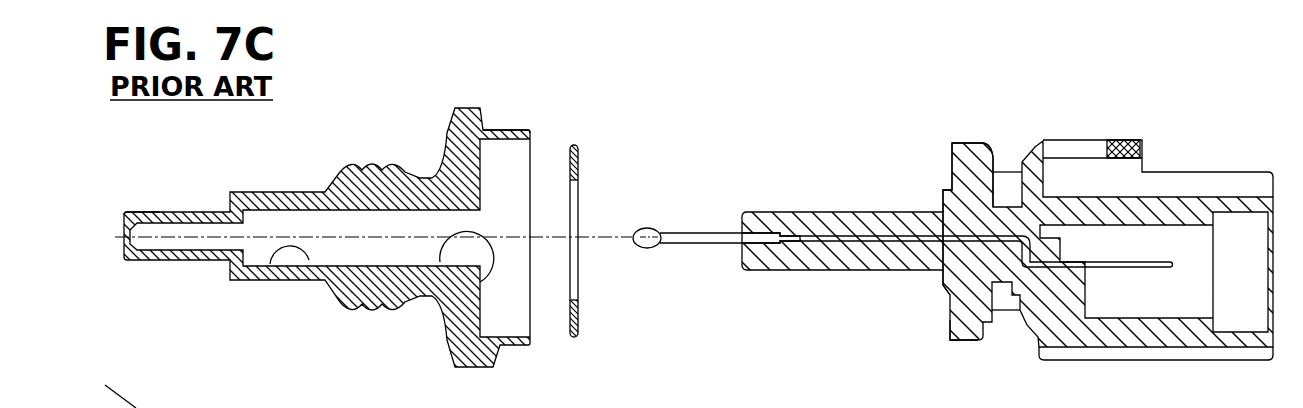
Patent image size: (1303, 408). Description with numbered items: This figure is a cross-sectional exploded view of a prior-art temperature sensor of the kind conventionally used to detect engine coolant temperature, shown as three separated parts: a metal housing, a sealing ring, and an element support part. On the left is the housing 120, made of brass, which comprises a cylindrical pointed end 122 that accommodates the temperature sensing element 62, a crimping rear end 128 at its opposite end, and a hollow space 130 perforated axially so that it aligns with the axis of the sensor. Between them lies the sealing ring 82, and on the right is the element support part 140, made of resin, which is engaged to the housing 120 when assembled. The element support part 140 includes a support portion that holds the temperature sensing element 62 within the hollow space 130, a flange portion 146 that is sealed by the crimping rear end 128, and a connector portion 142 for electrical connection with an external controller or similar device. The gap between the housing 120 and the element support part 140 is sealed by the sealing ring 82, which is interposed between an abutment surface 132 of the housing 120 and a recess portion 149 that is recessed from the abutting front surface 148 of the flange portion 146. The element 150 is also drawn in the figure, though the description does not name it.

The temperature sensing element 62 is at (650, 251).
The sealing ring 82 is at (579, 148).
The housing 120 is at (262, 181).
The cylindrical pointed end 122 is at (152, 211).
The crimping rear end 128 is at (527, 131).
The hollow space 130 is at (306, 282).
The abutment surface 132 is at (440, 288).
The element support part 140 is at (1067, 134).
The connector portion 142 is at (1136, 140).
The flange portion 146 is at (965, 142).
The abutting front surface 148 is at (943, 277).
The recess portion 149 is at (948, 318).
The insulating block 150 is at (802, 212).